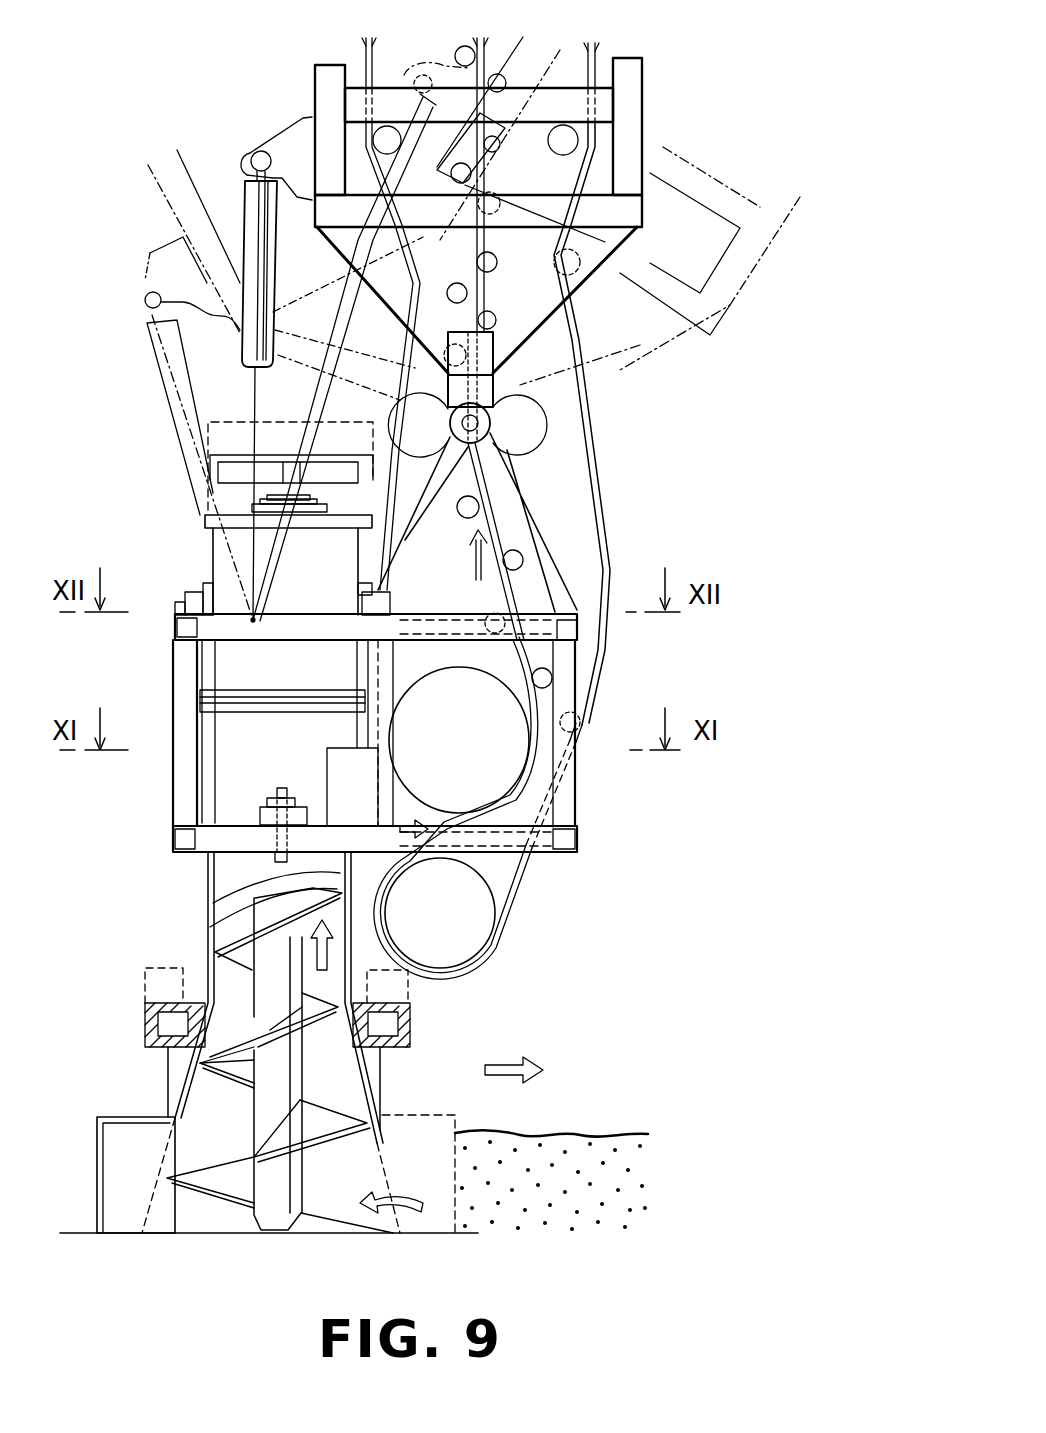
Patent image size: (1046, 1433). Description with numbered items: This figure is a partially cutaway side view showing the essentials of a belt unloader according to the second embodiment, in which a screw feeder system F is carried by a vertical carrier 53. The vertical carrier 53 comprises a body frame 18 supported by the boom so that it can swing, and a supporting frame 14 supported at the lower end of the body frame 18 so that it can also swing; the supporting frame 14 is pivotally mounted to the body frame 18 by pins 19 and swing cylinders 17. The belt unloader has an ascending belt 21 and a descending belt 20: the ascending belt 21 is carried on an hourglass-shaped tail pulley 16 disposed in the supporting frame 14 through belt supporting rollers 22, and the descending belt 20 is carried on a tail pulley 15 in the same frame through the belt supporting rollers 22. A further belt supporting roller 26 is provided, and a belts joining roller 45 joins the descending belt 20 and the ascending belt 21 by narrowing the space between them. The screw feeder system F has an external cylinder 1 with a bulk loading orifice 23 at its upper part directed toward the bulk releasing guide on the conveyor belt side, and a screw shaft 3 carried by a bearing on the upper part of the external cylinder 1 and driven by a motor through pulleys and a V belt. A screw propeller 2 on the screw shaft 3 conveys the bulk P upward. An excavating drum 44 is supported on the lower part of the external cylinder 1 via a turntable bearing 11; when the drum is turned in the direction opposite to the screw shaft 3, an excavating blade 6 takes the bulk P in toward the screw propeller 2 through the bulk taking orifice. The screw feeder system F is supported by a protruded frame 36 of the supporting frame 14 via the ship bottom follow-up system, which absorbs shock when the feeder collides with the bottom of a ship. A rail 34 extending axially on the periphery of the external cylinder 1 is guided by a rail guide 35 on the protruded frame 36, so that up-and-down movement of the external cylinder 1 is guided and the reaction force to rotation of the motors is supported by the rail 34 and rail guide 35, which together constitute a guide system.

The external cylinder 1 is at (206, 868).
The screw propeller 2 is at (320, 1125).
The screw shaft 3 is at (290, 1075).
The excavating blade 6 is at (100, 1160).
The turntable bearing 11 is at (411, 1020).
The supporting frame 14 is at (540, 520).
The tail pulley 15 is at (462, 922).
The hourglass-shaped tail pulley 16 is at (508, 752).
The swing cylinder 17 is at (245, 218).
The body frame 18 is at (630, 103).
The pin 19 is at (492, 423).
The descending belt 20 is at (522, 878).
The ascending belt 21 is at (330, 402).
The belt supporting roller 22 is at (557, 152).
The bulk loading orifice 23 is at (215, 926).
The belt supporting roller 26 is at (543, 405).
The rail 34 is at (205, 595).
The rail guide 35 is at (192, 600).
The protruded frame 36 is at (188, 680).
The excavating drum 44 is at (166, 1080).
The belts joining roller 45 is at (497, 265).
The vertical carrier 53 is at (658, 58).
The screw feeder system F is at (185, 910).
The bulk P is at (542, 1165).